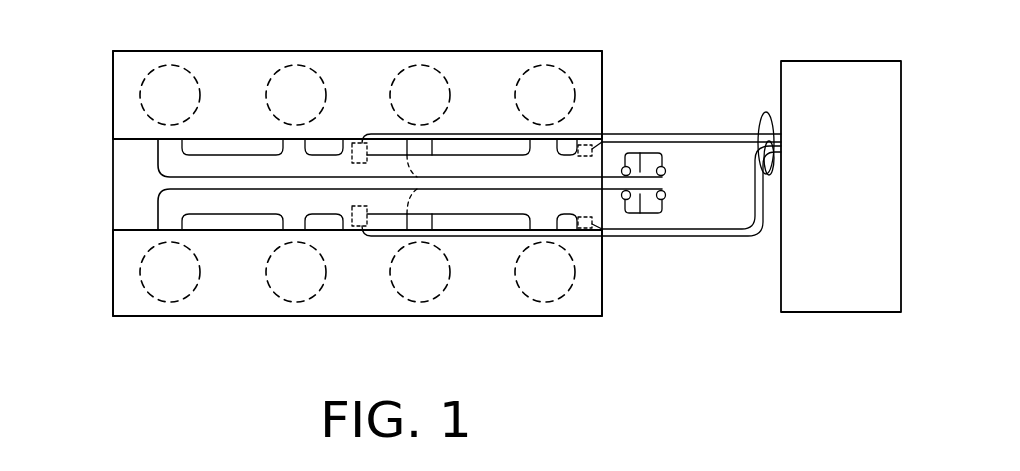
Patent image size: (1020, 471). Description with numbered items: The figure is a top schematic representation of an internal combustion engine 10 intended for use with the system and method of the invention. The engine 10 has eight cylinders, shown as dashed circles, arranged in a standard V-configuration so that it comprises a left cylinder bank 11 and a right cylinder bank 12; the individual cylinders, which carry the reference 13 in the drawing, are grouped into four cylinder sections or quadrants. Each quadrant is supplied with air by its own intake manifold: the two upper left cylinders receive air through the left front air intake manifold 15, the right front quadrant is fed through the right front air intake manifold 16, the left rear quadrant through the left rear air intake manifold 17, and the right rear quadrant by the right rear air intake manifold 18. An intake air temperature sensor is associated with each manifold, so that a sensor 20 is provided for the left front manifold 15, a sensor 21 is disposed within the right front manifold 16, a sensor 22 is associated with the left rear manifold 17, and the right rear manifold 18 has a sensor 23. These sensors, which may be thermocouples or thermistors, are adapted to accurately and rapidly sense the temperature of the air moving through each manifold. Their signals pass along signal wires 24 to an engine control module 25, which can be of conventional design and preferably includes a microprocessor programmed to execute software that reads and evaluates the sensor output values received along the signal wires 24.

The engine 10 is at (104, 160).
The left cylinder bank 11 is at (122, 65).
The right cylinder bank 12 is at (127, 295).
The cylinders 13 is at (273, 65).
The left front air intake manifold 15 is at (343, 163).
The right front air intake manifold 16 is at (218, 202).
The left rear air intake manifold 17 is at (642, 168).
The right rear air intake manifold 18 is at (640, 214).
The intake air temperature sensor 20 is at (353, 143).
The intake air temperature sensor 21 is at (349, 226).
The intake air temperature sensor 22 is at (590, 141).
The intake air temperature sensor 23 is at (582, 230).
The signal wires 24 is at (763, 112).
The engine control module 25 is at (863, 61).